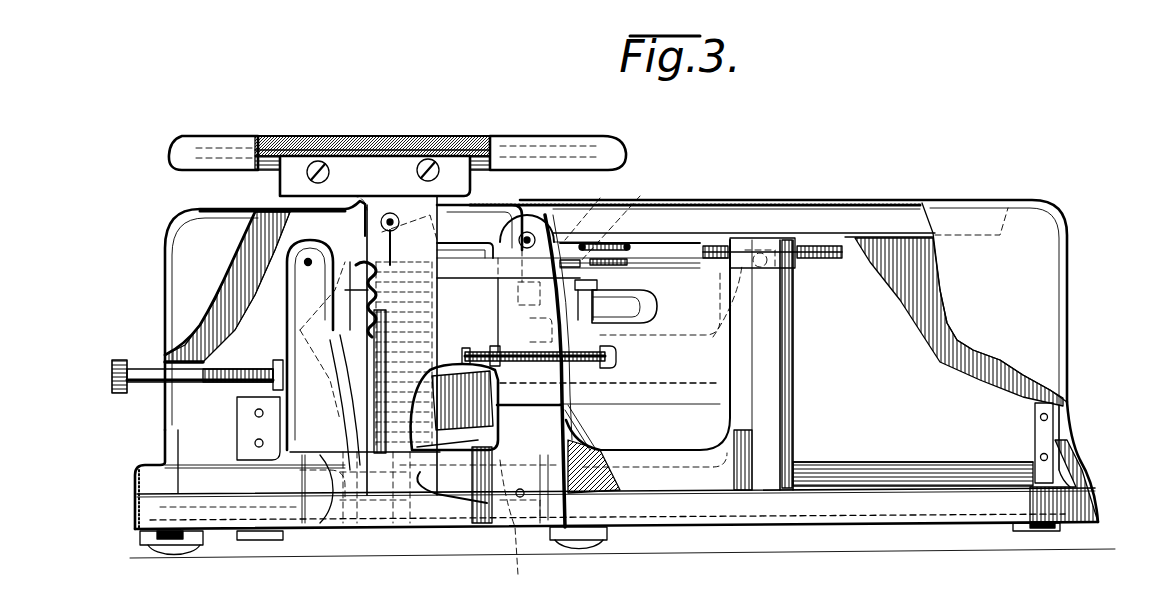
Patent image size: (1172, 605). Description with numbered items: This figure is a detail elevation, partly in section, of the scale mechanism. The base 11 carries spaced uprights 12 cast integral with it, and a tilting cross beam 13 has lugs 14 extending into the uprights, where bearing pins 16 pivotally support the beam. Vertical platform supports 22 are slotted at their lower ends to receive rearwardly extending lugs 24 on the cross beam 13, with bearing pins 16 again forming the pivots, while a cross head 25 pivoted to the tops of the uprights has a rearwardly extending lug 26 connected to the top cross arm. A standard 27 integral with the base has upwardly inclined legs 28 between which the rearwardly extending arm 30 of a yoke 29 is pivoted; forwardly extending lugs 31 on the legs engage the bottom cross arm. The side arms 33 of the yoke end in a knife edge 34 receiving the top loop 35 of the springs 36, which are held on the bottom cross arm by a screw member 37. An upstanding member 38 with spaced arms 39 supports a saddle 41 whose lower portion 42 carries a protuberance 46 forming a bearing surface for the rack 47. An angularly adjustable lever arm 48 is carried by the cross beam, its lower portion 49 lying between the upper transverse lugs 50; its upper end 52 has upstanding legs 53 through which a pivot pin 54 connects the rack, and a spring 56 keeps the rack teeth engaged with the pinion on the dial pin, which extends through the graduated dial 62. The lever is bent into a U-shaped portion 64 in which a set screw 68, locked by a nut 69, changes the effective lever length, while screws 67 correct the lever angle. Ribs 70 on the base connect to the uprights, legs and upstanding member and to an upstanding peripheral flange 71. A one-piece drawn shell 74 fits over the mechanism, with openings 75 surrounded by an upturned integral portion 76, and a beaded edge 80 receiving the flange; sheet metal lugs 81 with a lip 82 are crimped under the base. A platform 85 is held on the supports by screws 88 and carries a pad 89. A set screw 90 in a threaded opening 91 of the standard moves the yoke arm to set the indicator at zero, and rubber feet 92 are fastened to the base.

The base 11 is at (1087, 490).
The uprights 12 is at (600, 404).
The cross beam 13 is at (630, 383).
The lugs 14 is at (590, 447).
The bearing pins 16 is at (420, 488).
The platform supports 22 is at (345, 209).
The rearwardly extending lugs 24 is at (396, 528).
The cross head 25 is at (496, 290).
The rearwardly extending lug 26 is at (418, 212).
The standard 27 is at (250, 462).
The upwardly inclined legs 28 is at (300, 268).
The yoke 29 is at (352, 262).
The rearwardly extending arm 30 is at (310, 345).
The forwardly extending lugs 31 is at (345, 420).
The side arms 33 is at (396, 250).
The knife edge 34 is at (393, 205).
The top loop 35 is at (360, 283).
The springs 36 is at (438, 302).
The screw member 37 is at (400, 462).
The upstanding member 38 is at (805, 450).
The spaced arms 39 is at (796, 355).
The saddle 41 is at (800, 265).
The lower portion 42 is at (780, 280).
The protuberance 46 is at (713, 337).
The rack 47 is at (662, 290).
The lever arm 48 is at (572, 428).
The lower portion 49 is at (500, 345).
The upper transverse lugs 50 is at (478, 352).
The upper end 52 is at (528, 275).
The upstanding legs 53 is at (630, 209).
The pivot pin 54 is at (630, 223).
The spring 56 is at (660, 278).
The graduated dial 62 is at (846, 186).
The U-shaped portion 64 is at (660, 320).
The screws 67 is at (464, 352).
The set screw 68 is at (598, 316).
The nut 69 is at (600, 290).
The ribs 70 is at (179, 462).
The upstanding peripheral flange 71 is at (154, 468).
The one-piece drawn shell 74 is at (1068, 311).
The openings 75 is at (286, 222).
The upturned integral portion 76 is at (272, 208).
The beaded edge 80 is at (137, 494).
The lugs 81 is at (245, 410).
The lip 82 is at (175, 545).
The platform 85 is at (618, 143).
The screws 88 is at (438, 162).
The pad 89 is at (398, 134).
The set screw 90 is at (140, 370).
The threaded opening 91 is at (268, 370).
The rubber feet 92 is at (203, 543).